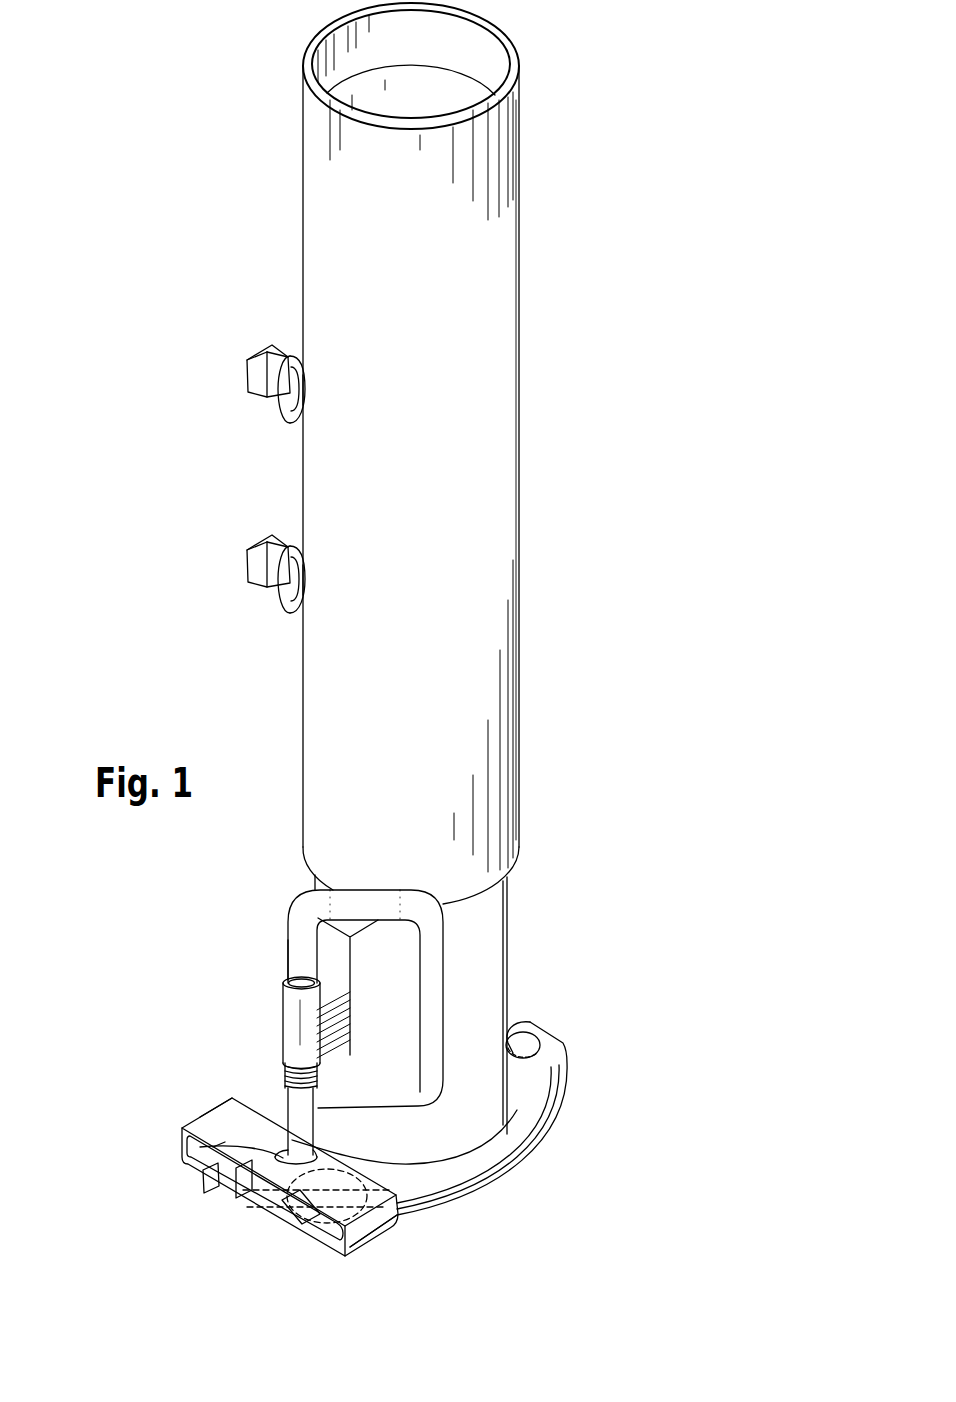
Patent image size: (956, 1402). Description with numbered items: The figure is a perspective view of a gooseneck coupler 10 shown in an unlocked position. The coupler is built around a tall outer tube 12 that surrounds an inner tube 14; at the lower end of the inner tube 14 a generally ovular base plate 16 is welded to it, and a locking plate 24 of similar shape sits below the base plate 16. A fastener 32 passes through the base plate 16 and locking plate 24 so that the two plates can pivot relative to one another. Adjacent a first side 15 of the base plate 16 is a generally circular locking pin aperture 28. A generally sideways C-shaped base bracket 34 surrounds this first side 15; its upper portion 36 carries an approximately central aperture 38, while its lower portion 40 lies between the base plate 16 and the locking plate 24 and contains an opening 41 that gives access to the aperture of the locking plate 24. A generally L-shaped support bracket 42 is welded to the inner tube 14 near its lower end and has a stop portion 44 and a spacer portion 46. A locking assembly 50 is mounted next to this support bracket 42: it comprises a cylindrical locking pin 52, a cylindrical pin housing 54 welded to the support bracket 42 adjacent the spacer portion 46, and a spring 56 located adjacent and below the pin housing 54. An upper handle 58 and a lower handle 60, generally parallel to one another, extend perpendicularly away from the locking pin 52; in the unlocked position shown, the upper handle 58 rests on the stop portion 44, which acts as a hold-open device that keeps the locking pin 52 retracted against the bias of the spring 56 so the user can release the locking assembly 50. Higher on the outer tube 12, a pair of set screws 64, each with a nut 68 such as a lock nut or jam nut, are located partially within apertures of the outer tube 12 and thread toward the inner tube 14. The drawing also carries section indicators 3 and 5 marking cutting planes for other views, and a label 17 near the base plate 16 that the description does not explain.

The gooseneck coupler 10 is at (560, 122).
The outer tube 12 is at (492, 52).
The inner tube 14 is at (352, 82).
The first side 15 is at (259, 1234).
The base plate 16 is at (527, 1097).
The plate edge 17 is at (582, 1028).
The locking plate 24 is at (420, 1220).
The locking pin aperture 28 is at (360, 1222).
The fastener 32 is at (520, 1045).
The base bracket 34 is at (184, 1099).
The upper portion 36 is at (224, 1125).
The aperture 38 is at (250, 1192).
The lower portion 40 is at (302, 1227).
The opening 41 is at (258, 1222).
The support bracket 42 is at (365, 966).
The stop portion 44 is at (318, 893).
The spacer portion 46 is at (330, 1017).
The locking assembly 50 is at (256, 922).
The locking pin 52 is at (292, 1140).
The pin housing 54 is at (297, 1015).
The spring 56 is at (287, 1078).
The upper handle 58 is at (373, 905).
The lower handle 60 is at (382, 1102).
The set screw 64 is at (253, 375).
The nut 68 is at (273, 398).
The section line 3 is at (282, 1038).
The section line 5 is at (540, 1030).